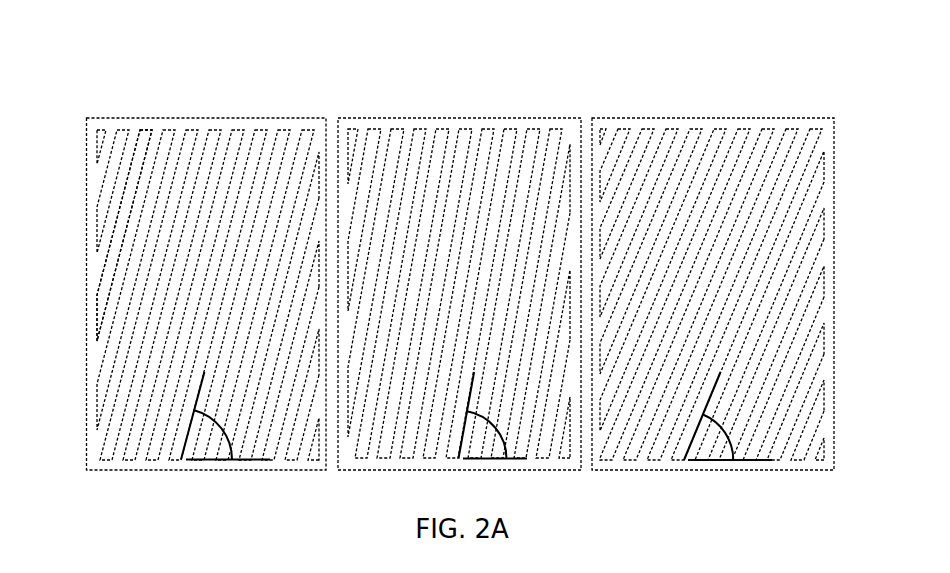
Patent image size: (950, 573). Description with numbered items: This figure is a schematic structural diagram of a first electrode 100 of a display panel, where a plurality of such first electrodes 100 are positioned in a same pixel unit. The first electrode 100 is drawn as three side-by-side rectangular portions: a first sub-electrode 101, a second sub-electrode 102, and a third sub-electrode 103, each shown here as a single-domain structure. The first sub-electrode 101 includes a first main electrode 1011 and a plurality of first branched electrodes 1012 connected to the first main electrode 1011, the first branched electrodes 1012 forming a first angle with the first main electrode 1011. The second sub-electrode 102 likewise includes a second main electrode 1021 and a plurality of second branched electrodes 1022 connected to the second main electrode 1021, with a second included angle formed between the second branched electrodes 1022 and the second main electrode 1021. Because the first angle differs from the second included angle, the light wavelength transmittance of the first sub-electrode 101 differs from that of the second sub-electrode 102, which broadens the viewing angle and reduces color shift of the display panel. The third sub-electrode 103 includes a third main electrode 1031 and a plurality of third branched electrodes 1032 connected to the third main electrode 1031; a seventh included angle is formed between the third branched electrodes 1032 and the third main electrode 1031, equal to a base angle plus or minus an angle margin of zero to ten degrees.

The first electrode 100 is at (147, 31).
The first sub-electrode 101 is at (188, 118).
The second sub-electrode 102 is at (387, 117).
The third sub-electrode 103 is at (710, 118).
The first main electrode 1011 is at (95, 282).
The first branched electrode 1012 is at (115, 198).
The second main electrode 1021 is at (477, 128).
The second branched electrode 1022 is at (543, 133).
The third main electrode 1031 is at (827, 283).
The third branched electrode 1032 is at (807, 185).